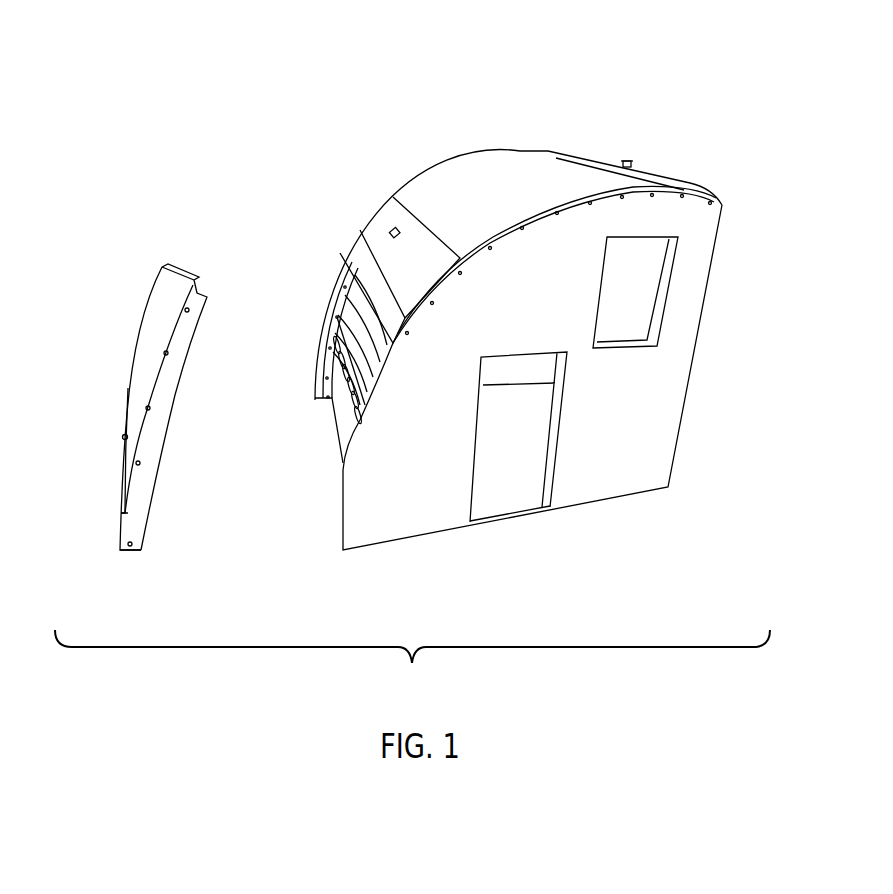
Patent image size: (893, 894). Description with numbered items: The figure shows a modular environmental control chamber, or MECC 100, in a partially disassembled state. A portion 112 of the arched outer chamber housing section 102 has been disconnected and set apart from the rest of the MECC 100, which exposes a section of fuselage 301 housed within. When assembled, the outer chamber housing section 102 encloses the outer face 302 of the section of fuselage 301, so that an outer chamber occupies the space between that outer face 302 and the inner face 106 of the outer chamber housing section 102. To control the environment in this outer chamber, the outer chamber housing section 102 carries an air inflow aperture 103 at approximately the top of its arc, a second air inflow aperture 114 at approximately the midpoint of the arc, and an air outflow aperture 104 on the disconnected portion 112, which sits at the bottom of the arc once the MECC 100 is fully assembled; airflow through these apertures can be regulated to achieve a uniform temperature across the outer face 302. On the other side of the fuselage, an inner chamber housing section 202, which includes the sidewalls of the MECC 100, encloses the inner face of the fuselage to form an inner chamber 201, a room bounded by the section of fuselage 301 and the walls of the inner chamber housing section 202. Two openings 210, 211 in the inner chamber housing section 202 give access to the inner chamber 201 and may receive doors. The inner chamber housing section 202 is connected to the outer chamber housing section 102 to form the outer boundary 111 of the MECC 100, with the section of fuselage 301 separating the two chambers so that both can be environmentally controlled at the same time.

The MECC 100 is at (565, 70).
The outer chamber housing section 102 is at (152, 315).
The air inflow aperture 103 is at (628, 161).
The air outflow aperture 104 is at (123, 436).
The inner face 106 is at (142, 538).
The outer boundary 111 is at (423, 173).
The portion 112 is at (190, 243).
The second air inflow aperture 114 is at (393, 230).
The inner chamber 201 is at (513, 498).
The inner chamber housing section 202 is at (692, 272).
The opening 210 is at (492, 356).
The opening 211 is at (607, 255).
The section of fuselage 301 is at (312, 446).
The outer face 302 is at (337, 404).